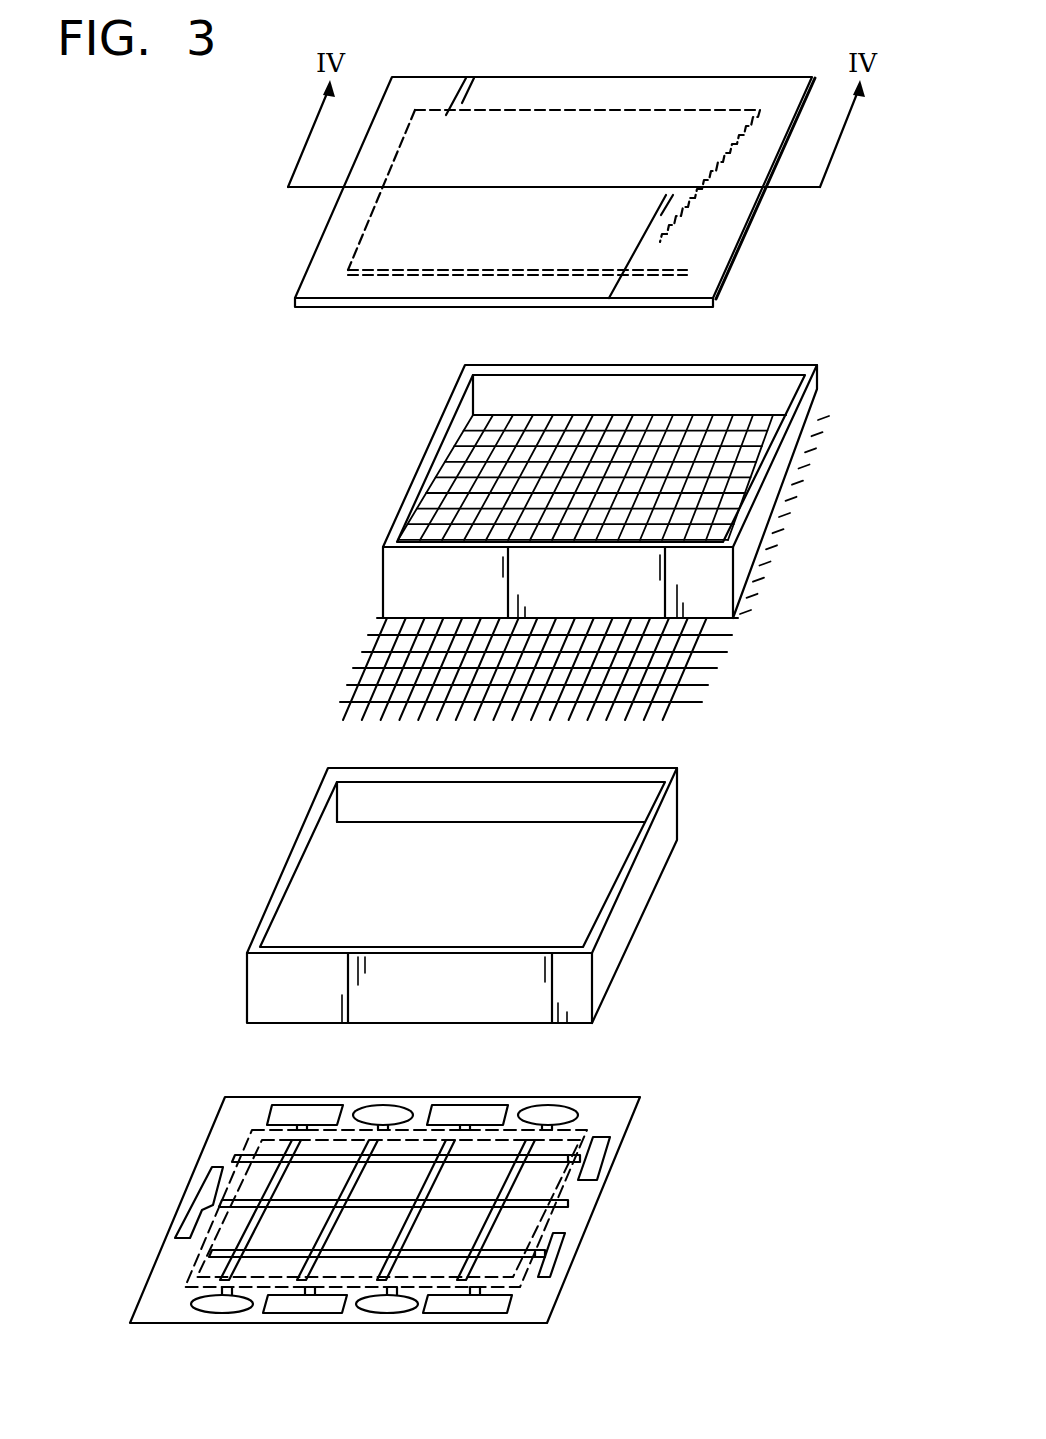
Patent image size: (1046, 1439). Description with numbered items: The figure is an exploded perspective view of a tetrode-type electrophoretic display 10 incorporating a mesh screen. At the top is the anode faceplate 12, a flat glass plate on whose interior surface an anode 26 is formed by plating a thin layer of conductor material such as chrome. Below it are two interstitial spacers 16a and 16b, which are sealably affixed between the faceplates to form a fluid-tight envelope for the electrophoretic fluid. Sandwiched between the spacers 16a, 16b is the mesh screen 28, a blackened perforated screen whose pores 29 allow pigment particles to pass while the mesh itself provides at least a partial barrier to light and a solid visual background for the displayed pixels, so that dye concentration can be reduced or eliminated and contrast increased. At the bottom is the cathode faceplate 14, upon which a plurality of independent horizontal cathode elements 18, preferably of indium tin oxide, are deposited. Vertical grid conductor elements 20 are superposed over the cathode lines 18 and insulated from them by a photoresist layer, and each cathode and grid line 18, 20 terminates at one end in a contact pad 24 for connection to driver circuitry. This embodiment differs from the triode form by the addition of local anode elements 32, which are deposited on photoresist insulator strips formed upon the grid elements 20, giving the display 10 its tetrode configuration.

The electrophoretic display 10 is at (289, 77).
The anode faceplate 12 is at (565, 102).
The anode 26 is at (473, 227).
The interstitial spacer 16b is at (773, 497).
The mesh screen 28 is at (548, 669).
The pores 29 is at (677, 651).
The interstitial spacer 16a is at (640, 880).
The cathode faceplate 14 is at (383, 1194).
The cathode elements 18 is at (227, 1257).
The grid conductor elements 20 is at (283, 1157).
The local anode elements 32 is at (275, 1183).
The contact pad 24 is at (303, 1115).